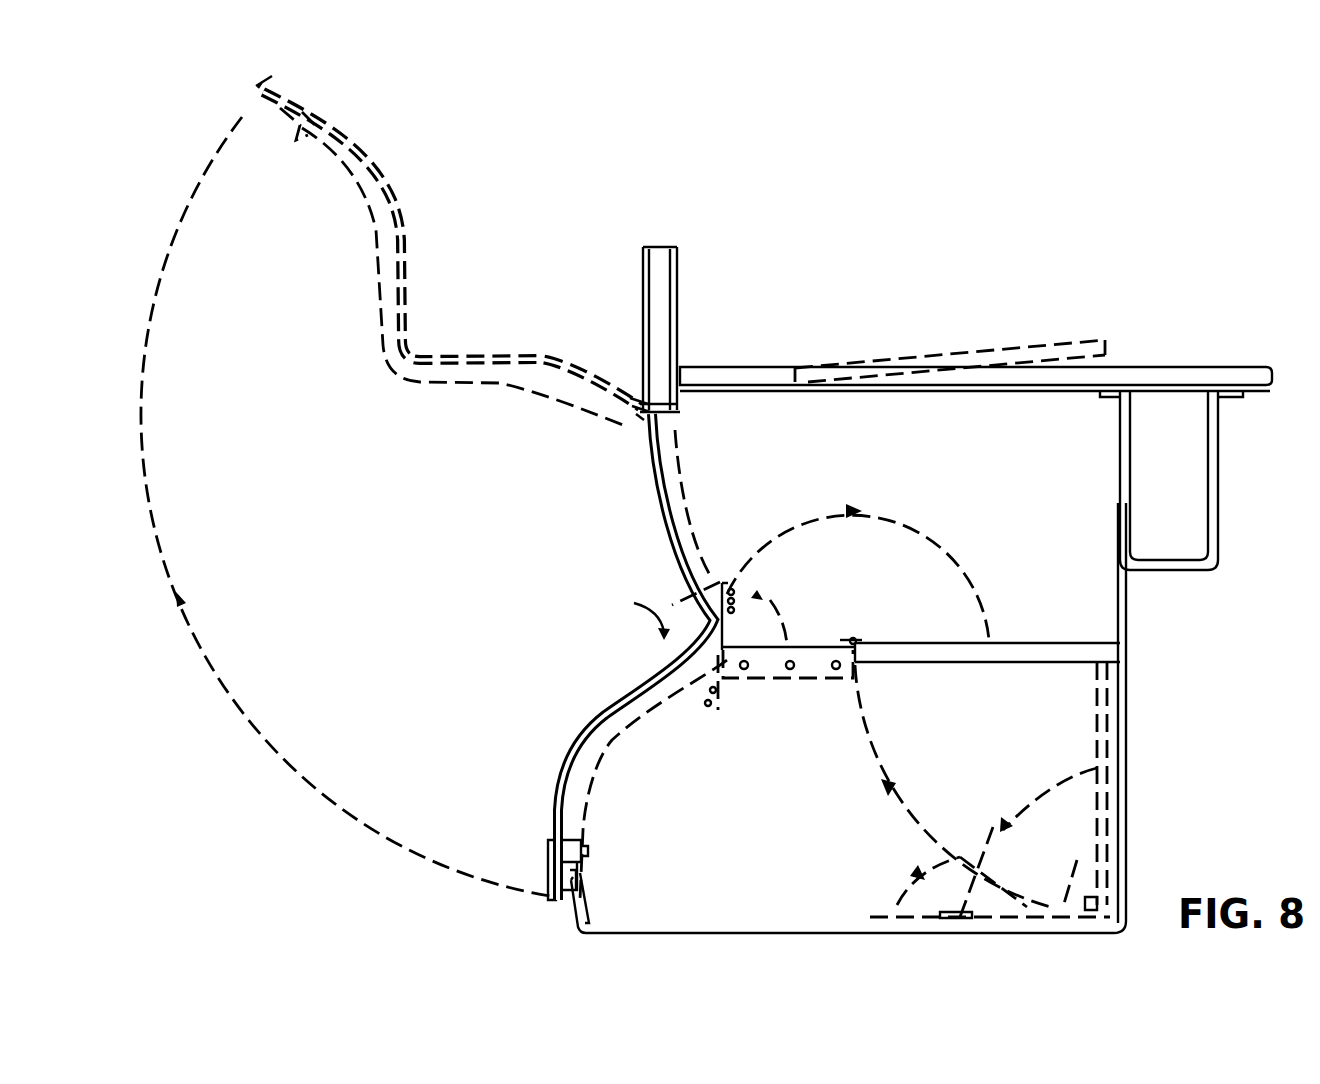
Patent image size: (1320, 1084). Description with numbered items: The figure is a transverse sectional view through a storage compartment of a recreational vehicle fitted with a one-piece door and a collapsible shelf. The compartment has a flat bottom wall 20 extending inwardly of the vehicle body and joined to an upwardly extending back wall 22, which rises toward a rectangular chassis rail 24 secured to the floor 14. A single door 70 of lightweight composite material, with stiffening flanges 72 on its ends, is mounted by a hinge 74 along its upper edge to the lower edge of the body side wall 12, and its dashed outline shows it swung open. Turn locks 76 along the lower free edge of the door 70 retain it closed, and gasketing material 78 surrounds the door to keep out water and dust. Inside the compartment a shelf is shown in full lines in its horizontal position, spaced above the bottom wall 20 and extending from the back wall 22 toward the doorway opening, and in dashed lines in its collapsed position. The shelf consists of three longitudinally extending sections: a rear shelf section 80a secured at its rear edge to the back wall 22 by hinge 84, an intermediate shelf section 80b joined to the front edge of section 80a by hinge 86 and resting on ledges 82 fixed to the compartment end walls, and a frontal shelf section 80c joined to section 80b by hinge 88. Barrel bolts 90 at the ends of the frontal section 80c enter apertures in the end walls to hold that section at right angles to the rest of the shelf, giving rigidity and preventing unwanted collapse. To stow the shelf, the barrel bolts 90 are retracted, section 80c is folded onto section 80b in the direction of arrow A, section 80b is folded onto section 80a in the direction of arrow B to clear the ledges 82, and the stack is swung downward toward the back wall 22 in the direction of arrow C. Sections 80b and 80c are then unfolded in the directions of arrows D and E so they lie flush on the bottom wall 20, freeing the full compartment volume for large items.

The side wall 12 is at (658, 294).
The floor 14 is at (968, 372).
The bottom wall 20 is at (672, 923).
The back wall 22 is at (1128, 745).
The chassis rail 24 is at (1168, 572).
The door 70 is at (410, 280).
The stiffening flanges 72 is at (610, 740).
The hinge 74 is at (645, 405).
The turn locks 76 is at (570, 848).
The gasketing material 78 is at (548, 856).
The shelf section 80a is at (992, 648).
The intermediate shelf section 80b is at (790, 645).
The frontal shelf section 80c is at (740, 625).
The ledges 82 is at (765, 672).
The hinge 84 is at (1112, 660).
The hinge 86 is at (860, 640).
The hinge 88 is at (656, 660).
The barrel bolts 90 is at (738, 598).
The arrow A is at (641, 618).
The arrow B is at (905, 513).
The arrow C is at (887, 785).
The arrow D is at (1000, 826).
The arrow E is at (922, 877).